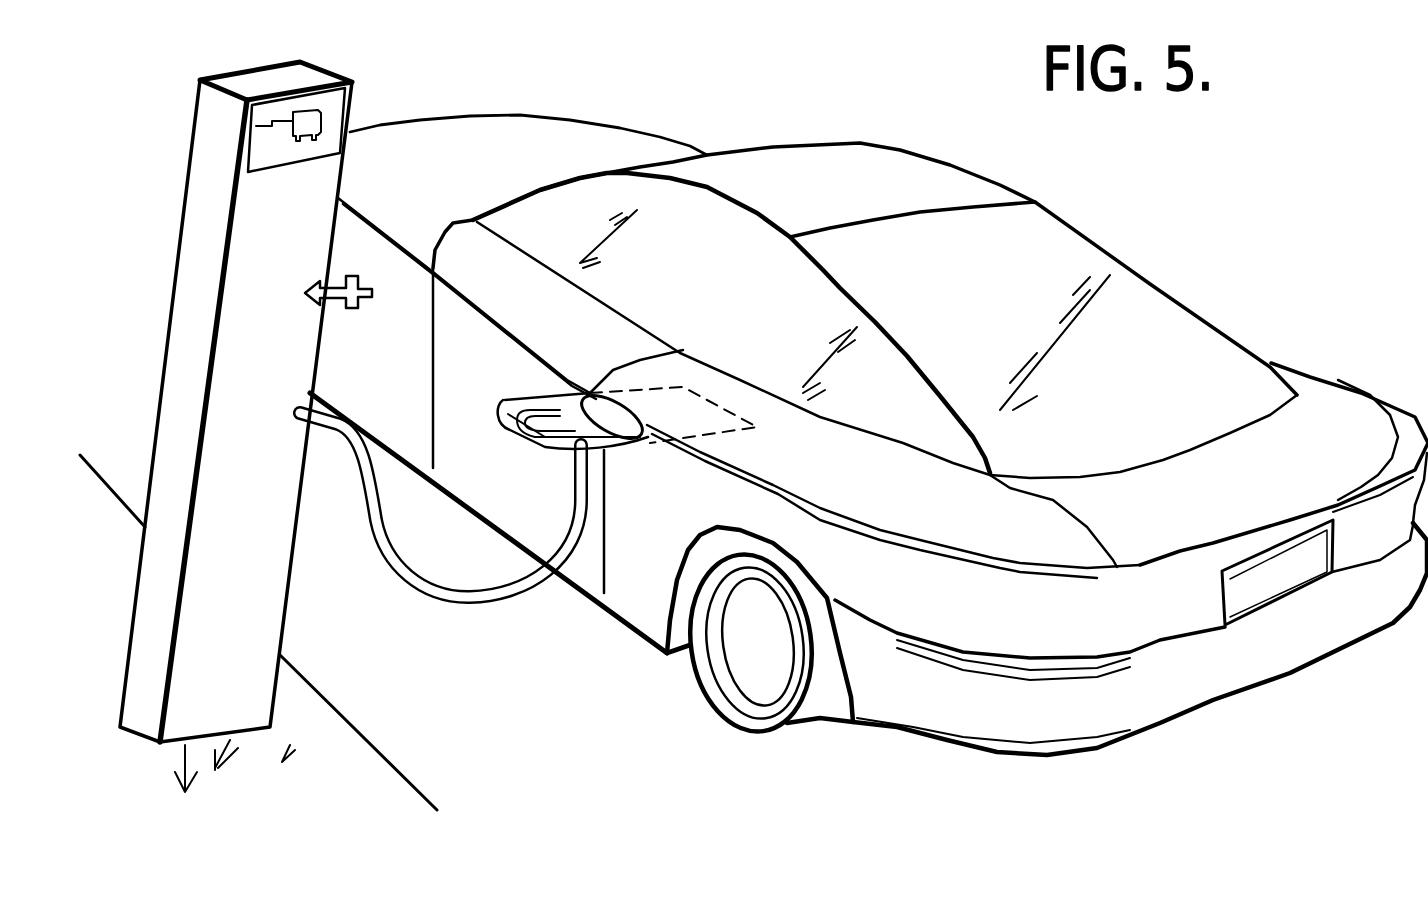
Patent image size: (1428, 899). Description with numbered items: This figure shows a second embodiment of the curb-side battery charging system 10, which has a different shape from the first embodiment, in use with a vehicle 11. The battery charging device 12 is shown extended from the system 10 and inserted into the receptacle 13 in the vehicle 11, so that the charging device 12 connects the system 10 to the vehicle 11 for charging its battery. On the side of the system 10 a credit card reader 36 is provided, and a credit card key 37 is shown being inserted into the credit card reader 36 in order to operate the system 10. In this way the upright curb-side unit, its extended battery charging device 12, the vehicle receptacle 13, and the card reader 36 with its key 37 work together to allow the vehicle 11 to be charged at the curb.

The curb-side battery charging system 10 is at (198, 337).
The vehicle 11 is at (963, 717).
The battery charging device 12 is at (513, 400).
The receptacle 13 is at (727, 423).
The credit card reader 36 is at (352, 241).
The credit card key 37 is at (347, 308).